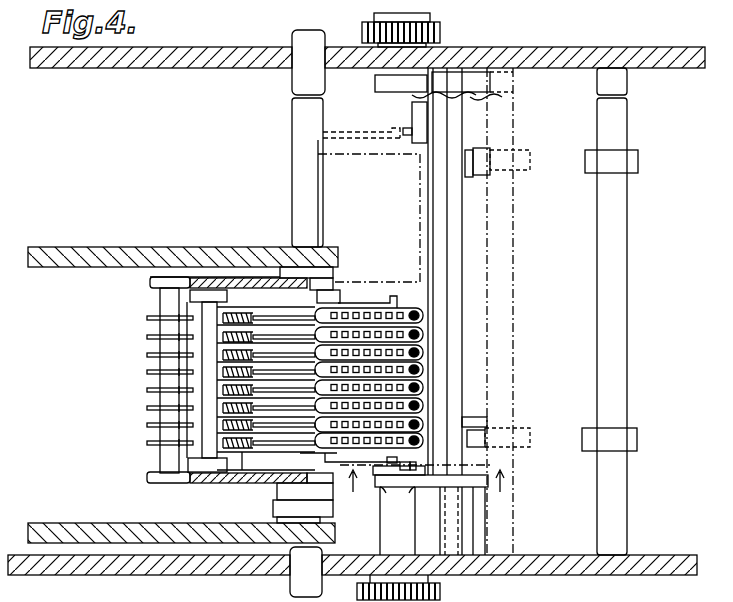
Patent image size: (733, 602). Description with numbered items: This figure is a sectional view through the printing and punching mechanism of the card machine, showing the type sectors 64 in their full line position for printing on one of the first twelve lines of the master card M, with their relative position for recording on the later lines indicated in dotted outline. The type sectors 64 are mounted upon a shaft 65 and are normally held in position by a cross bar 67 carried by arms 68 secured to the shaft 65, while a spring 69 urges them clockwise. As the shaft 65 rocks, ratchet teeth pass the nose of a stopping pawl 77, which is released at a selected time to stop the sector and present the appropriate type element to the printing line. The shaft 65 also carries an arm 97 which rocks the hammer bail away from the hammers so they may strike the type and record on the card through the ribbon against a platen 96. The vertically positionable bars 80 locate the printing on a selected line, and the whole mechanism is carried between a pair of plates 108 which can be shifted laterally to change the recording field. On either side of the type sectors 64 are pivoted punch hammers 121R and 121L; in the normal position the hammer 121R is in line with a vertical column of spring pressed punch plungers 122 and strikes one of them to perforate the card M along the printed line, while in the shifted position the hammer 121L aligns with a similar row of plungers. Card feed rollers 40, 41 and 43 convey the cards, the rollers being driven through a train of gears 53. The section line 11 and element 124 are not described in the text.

The section line arrows 11 is at (427, 488).
The pair of feed rollers 40 is at (482, 156).
The pair of feed rollers 41 is at (625, 160).
The pair of rollers 43 is at (378, 82).
The train of gears 53 is at (442, 30).
The type sectors 64 is at (413, 330).
The shaft 65 is at (300, 148).
The cross bar 67 is at (200, 379).
The arms 68 is at (170, 295).
The spring 69 is at (242, 452).
The stopping pawl 77 is at (167, 350).
The vertically positionable bars 80 is at (150, 282).
The platen 96 is at (440, 276).
The arm 97 is at (275, 508).
The plates 108 is at (123, 247).
The punch hammer 121L is at (380, 130).
The punch hammer 121R is at (388, 463).
The punch plungers 122 is at (405, 475).
The switch cam 124 is at (405, 130).
The master card M is at (430, 222).